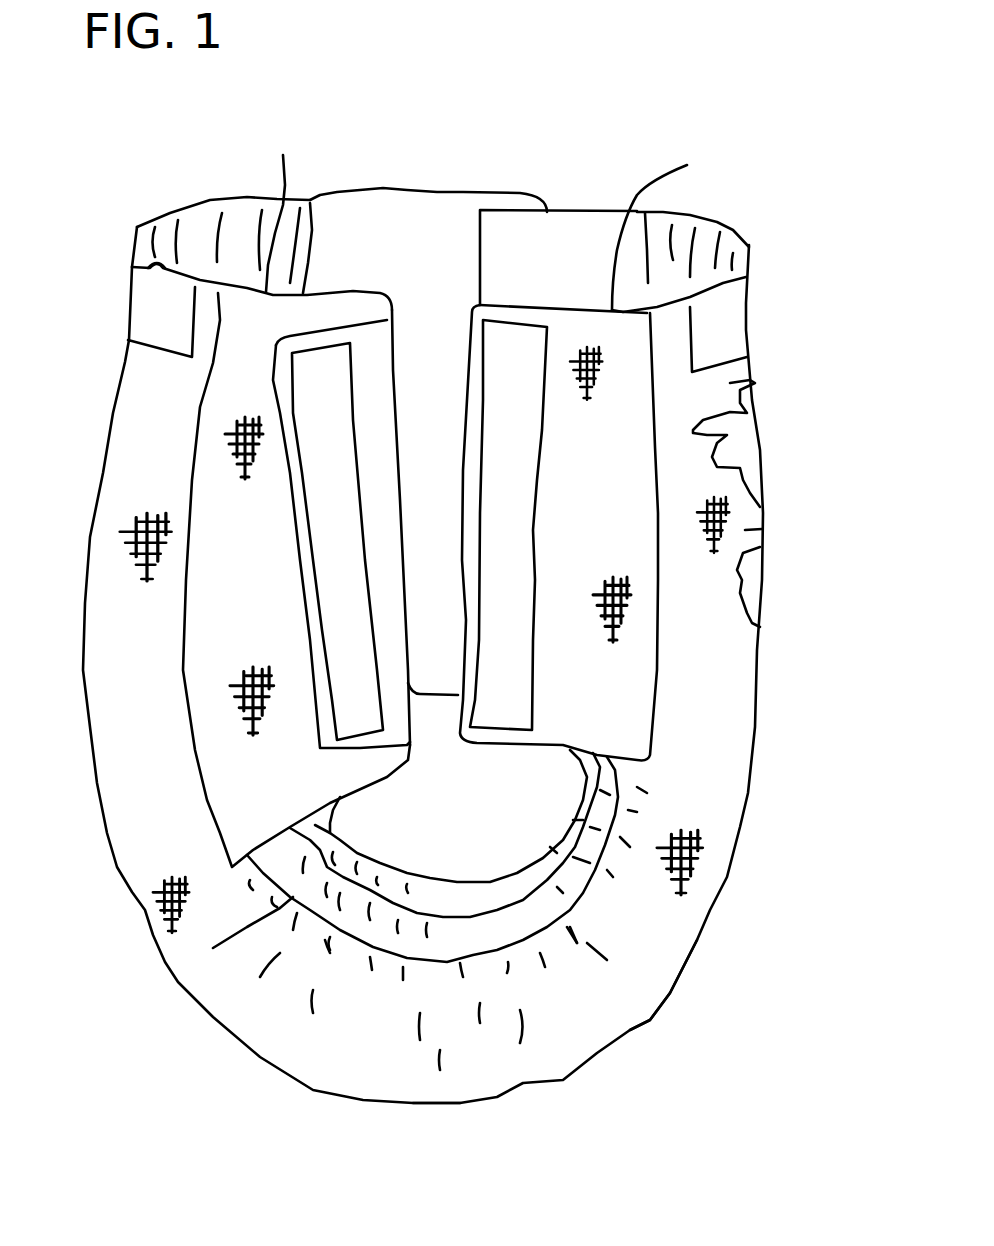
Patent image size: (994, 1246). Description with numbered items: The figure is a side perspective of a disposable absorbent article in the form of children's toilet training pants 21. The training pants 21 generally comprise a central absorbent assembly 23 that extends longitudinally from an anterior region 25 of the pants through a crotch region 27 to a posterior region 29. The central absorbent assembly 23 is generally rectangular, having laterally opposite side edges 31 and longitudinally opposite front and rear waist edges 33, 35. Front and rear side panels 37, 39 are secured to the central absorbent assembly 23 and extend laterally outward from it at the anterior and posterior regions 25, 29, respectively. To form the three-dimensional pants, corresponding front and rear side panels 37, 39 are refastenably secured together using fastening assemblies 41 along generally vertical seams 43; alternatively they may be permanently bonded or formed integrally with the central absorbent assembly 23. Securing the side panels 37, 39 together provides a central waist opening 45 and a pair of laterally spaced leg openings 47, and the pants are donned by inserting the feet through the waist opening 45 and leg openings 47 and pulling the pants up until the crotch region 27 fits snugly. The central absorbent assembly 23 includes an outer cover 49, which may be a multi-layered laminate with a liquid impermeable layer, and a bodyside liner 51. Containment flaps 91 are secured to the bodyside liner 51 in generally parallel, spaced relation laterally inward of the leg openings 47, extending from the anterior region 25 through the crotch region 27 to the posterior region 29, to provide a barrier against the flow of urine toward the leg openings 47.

The training pants 21 is at (530, 150).
The central absorbent assembly 23 is at (252, 1082).
The anterior region 25 is at (747, 530).
The crotch region 27 is at (457, 1103).
The posterior region 29 is at (92, 533).
The side edges 31 is at (213, 948).
The front waist edge 33 is at (748, 247).
The rear waist edge 35 is at (142, 227).
The front side panels 37 is at (610, 207).
The rear side panels 39 is at (323, 192).
The fastening assemblies 41 is at (340, 387).
The seams 43 is at (477, 230).
The waist opening 45 is at (157, 270).
The leg openings 47 is at (577, 753).
The outer cover 49 is at (668, 1038).
The bodyside liner 51 is at (343, 840).
The containment flaps 91 is at (450, 895).